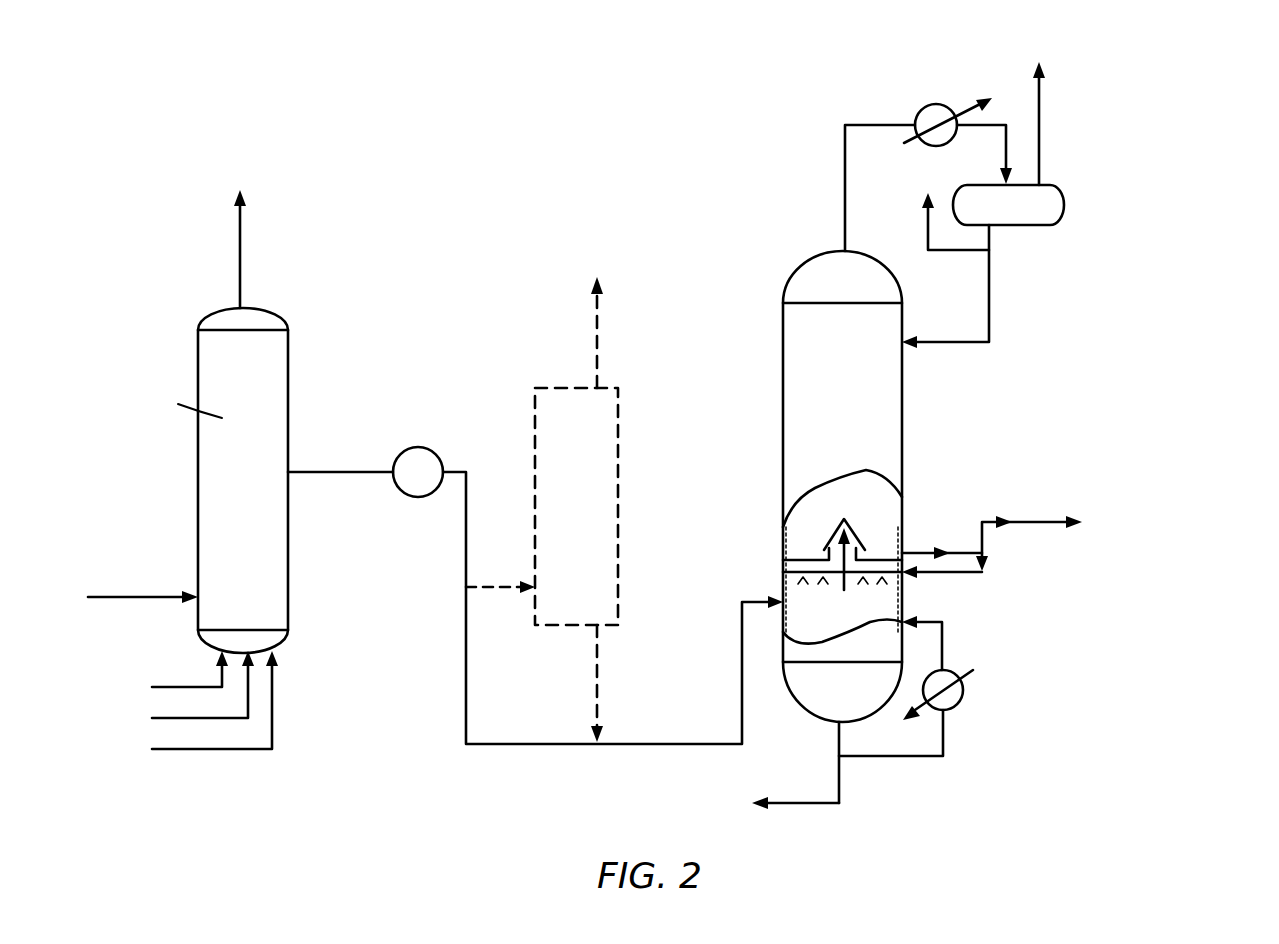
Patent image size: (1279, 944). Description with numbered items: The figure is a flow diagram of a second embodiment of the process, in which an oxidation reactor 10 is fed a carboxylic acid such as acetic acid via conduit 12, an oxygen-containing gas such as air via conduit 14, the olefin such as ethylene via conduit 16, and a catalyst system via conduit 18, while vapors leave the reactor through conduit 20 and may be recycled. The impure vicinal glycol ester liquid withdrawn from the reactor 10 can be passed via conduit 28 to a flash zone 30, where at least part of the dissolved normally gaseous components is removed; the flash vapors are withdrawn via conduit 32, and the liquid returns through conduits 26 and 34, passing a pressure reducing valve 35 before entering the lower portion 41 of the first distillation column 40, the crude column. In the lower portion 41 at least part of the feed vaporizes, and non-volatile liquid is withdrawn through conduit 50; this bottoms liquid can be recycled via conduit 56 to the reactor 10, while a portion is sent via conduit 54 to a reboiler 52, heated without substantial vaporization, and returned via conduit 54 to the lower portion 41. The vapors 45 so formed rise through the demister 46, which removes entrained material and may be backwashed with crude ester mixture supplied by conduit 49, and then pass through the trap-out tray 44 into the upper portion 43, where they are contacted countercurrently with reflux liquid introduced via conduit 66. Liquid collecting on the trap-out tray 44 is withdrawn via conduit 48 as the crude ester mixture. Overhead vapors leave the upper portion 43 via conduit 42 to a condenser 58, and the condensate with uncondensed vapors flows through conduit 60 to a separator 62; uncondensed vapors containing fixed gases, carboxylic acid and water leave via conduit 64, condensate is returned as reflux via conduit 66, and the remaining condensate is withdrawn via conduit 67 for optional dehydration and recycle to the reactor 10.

The oxidation reactor 10 is at (198, 452).
The conduit 12 is at (140, 588).
The conduit 14 is at (186, 685).
The conduit 16 is at (178, 712).
The conduit 18 is at (218, 755).
The conduit 20 is at (242, 250).
The conduit 26 is at (600, 665).
The conduit 28 is at (498, 590).
The flash zone 30 is at (580, 580).
The conduit 32 is at (600, 330).
The conduit 34 is at (312, 474).
The pressure reducing valve 35 is at (402, 448).
The first distillation column 40 is at (783, 412).
The lower portion 41 is at (835, 621).
The conduit 42 is at (843, 196).
The upper portion 43 is at (872, 508).
The trap-out tray 44 is at (832, 527).
The vapors 45 is at (850, 585).
The demister 46 is at (798, 578).
The conduit 48 is at (975, 548).
The conduit 49 is at (980, 575).
The conduit 50 is at (838, 740).
The reboiler 52 is at (955, 708).
The conduit 54 is at (945, 650).
The conduit 56 is at (770, 805).
The condenser 58 is at (948, 105).
The conduit 60 is at (996, 118).
The separator 62 is at (1025, 228).
The conduit 64 is at (1042, 125).
The conduit 66 is at (992, 300).
The conduit 67 is at (925, 232).